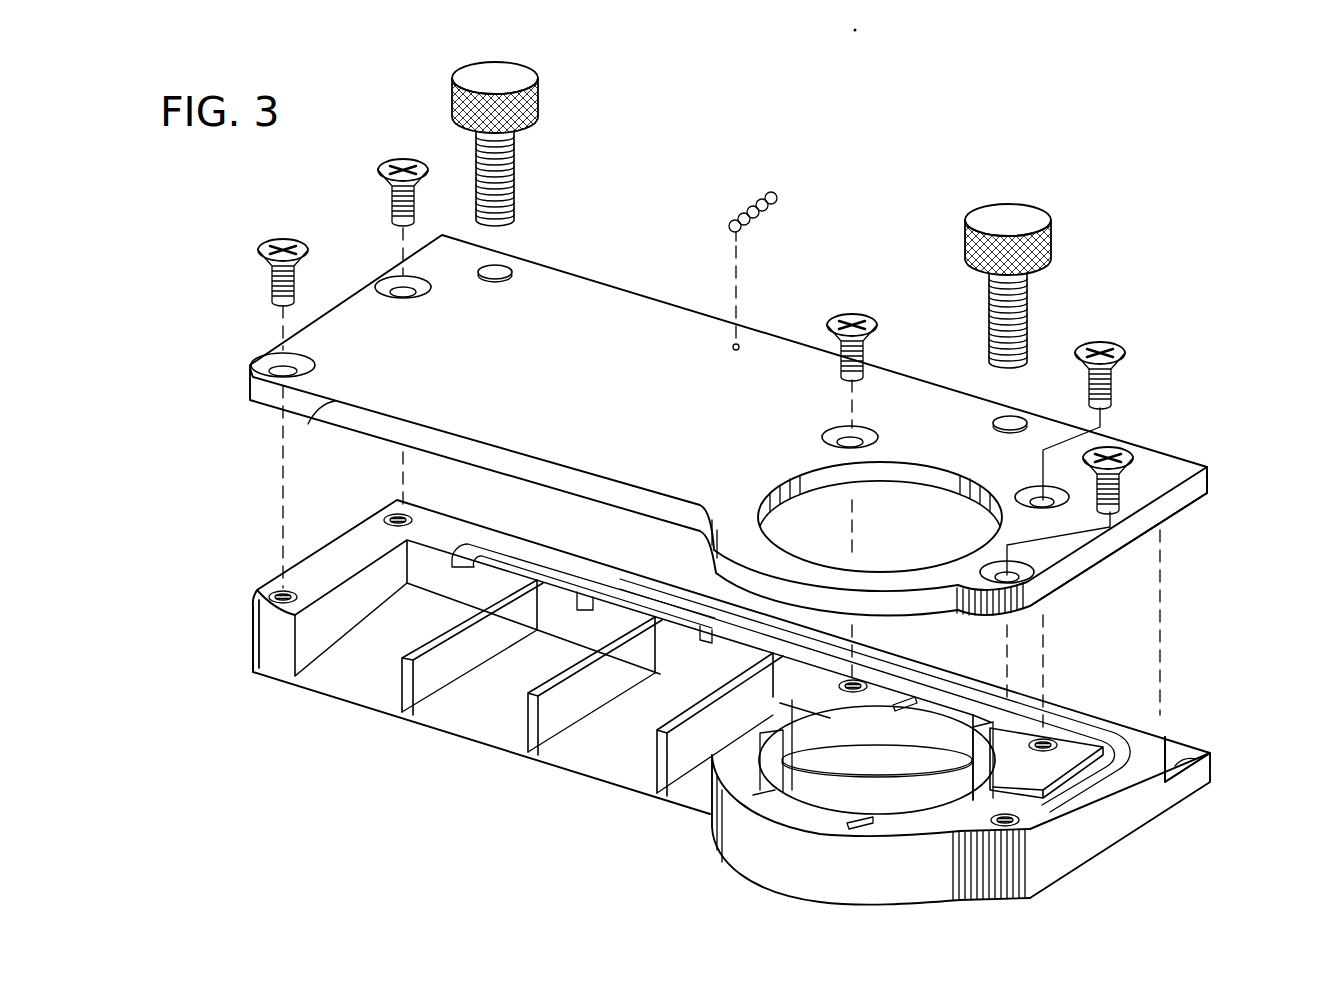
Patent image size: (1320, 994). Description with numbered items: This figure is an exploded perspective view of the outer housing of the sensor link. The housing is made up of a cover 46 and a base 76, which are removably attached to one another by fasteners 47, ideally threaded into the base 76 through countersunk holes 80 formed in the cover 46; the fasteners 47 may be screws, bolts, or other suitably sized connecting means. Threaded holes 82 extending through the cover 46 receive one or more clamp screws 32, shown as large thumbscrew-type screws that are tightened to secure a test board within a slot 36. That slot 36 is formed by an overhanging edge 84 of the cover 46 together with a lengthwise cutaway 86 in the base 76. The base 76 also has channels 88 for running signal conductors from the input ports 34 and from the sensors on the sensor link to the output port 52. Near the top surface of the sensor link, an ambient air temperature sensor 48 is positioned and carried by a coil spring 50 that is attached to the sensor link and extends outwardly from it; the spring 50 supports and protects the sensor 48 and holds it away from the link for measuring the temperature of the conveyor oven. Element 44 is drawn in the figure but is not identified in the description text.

The clamp screws 32 is at (500, 74).
The input ports 34 is at (365, 680).
The slot 36 is at (756, 702).
The disk seat 44 is at (891, 737).
The cover 46 is at (310, 420).
The fasteners 47 is at (268, 250).
The ambient air temperature sensor 48 is at (778, 196).
The coil spring 50 is at (776, 214).
The output port 52 is at (707, 752).
The base 76 is at (272, 640).
The countersunk holes 80 is at (274, 360).
The threaded holes 82 is at (498, 272).
The overhanging edge 84 is at (1198, 495).
The lengthwise cutaway 86 is at (1204, 768).
The channels 88 is at (575, 600).